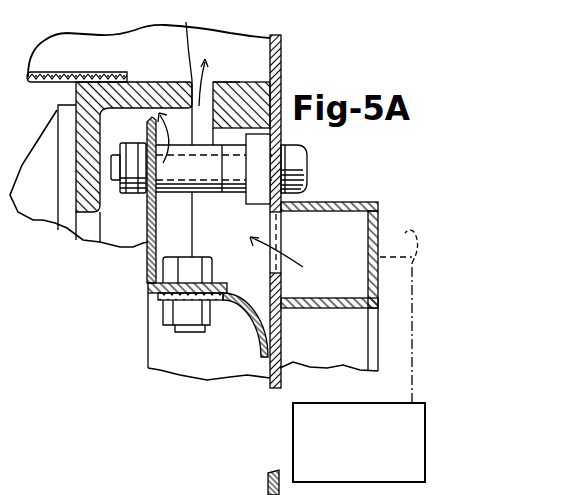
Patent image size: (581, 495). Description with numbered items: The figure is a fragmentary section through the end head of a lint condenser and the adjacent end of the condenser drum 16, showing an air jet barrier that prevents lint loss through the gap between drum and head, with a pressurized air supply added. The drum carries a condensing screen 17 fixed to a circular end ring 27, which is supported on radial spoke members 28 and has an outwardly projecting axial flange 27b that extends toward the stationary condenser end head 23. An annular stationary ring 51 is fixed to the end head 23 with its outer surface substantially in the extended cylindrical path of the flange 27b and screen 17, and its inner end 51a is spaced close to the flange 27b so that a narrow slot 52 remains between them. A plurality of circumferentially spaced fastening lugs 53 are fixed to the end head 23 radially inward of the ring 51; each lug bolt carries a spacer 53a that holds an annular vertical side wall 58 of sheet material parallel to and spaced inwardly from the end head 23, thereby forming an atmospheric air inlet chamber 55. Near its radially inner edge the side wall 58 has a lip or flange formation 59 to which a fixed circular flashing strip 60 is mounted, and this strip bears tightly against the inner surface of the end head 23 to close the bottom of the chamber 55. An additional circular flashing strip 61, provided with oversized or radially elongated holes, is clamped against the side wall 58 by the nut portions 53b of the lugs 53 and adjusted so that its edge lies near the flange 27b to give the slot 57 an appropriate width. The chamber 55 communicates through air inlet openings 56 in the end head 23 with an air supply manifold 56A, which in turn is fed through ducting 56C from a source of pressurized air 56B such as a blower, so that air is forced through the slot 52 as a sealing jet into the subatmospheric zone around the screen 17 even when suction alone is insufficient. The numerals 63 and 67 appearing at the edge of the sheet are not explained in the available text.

The condenser drum 16 is at (67, 72).
The condensing screen 17 is at (55, 87).
The condenser end head 23 is at (282, 53).
The circular end ring 27 is at (147, 82).
The outwardly projecting flange 27b is at (129, 76).
The radial spoke member 28 is at (44, 217).
The stationary ring 51 is at (252, 81).
The inner end of stationary ring 51a is at (213, 80).
The slot 52 is at (190, 72).
The fastening lug 53 is at (306, 181).
The spacer 53a is at (206, 192).
The nut portion 53b is at (128, 194).
The atmospheric air inlet chamber 55 is at (237, 251).
The air inlet opening 56 is at (283, 237).
The air supply manifold 56A is at (358, 202).
The source of pressurized air 56B is at (293, 442).
The ducting 56C is at (404, 300).
The slot 57 is at (168, 153).
The annular vertical side wall 58 is at (146, 279).
The lip or flange formation 59 is at (222, 281).
The fixed circular flashing strip 60 is at (250, 330).
The additional circular flashing strip 61 is at (149, 208).
The element 63 is at (317, 491).
The element 67 is at (225, 494).